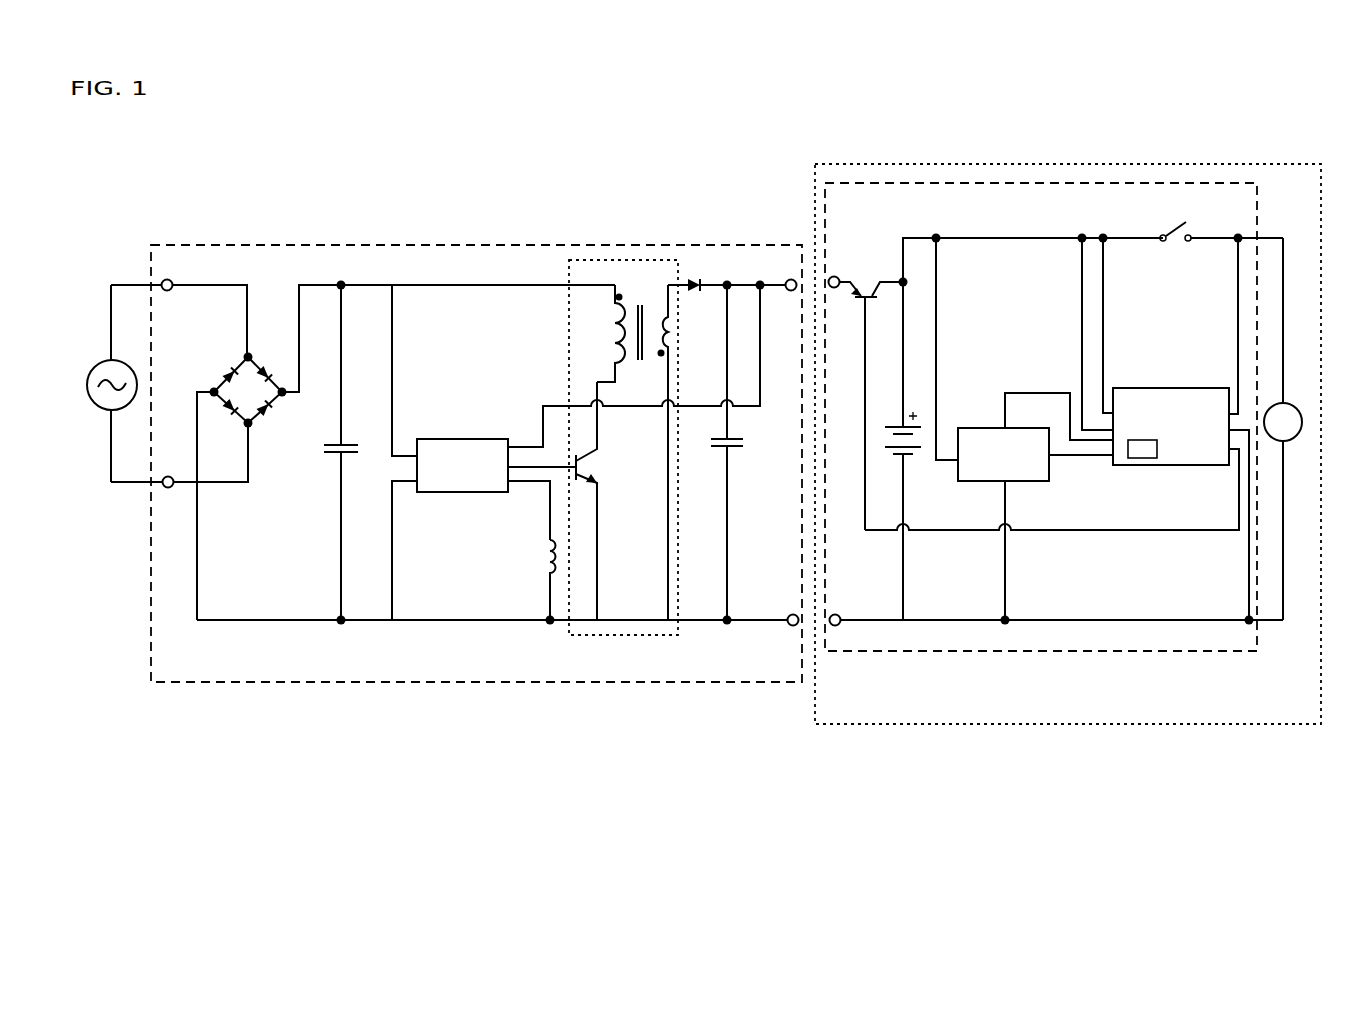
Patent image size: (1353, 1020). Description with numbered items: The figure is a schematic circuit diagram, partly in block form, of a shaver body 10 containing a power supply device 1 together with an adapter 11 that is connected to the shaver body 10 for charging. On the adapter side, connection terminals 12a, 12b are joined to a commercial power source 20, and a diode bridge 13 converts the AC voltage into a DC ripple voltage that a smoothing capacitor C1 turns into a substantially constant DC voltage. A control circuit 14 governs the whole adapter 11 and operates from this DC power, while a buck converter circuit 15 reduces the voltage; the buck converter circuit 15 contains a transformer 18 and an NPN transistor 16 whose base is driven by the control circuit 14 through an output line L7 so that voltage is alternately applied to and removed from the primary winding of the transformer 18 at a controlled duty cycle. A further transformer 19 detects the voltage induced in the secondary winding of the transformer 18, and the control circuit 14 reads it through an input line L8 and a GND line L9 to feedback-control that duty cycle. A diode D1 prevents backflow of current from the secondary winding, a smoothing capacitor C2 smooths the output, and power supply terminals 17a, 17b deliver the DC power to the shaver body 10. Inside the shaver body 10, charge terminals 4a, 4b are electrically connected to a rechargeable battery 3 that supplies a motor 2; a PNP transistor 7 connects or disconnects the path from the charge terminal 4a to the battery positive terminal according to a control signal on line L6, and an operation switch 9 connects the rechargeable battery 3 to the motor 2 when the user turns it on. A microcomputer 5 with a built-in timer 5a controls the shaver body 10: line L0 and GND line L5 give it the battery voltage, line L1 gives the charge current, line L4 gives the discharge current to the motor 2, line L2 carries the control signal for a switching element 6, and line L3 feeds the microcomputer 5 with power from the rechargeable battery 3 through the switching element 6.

The power supply device 1 is at (915, 651).
The motor 2 is at (1297, 411).
The rechargeable battery 3 is at (906, 462).
The charge terminal 4a is at (835, 277).
The charge terminal 4b is at (836, 627).
The microcomputer 5 is at (1178, 416).
The built-in timer 5a is at (1157, 447).
The switching element 6 is at (1018, 484).
The transistor 7 is at (871, 396).
The operation switch 9 is at (1178, 243).
The shaver body 10 is at (1003, 164).
The adapter 11 is at (383, 245).
The connection terminal 12a is at (169, 281).
The connection terminal 12b is at (168, 489).
The diode bridge 13 is at (249, 385).
The control circuit 14 is at (450, 452).
The buck converter circuit 15 is at (615, 635).
The transistor 16 is at (570, 501).
The power supply terminal 17a is at (788, 281).
The power supply terminal 17b is at (793, 627).
The transformer 18 is at (632, 443).
The transformer 19 is at (533, 582).
The commercial power source 20 is at (96, 372).
The smoothing capacitor C1 is at (352, 453).
The smoothing capacitor C2 is at (738, 455).
The diode D1 is at (727, 274).
The line L0 is at (1103, 326).
The line L1 is at (1082, 298).
The line L2 is at (1052, 392).
The line L3 is at (1063, 458).
The line L4 is at (1237, 275).
The GND line L5 is at (1247, 588).
The line L6 is at (1092, 532).
The output line L7 is at (557, 467).
The input line L8 is at (550, 506).
The GND line L9 is at (392, 562).